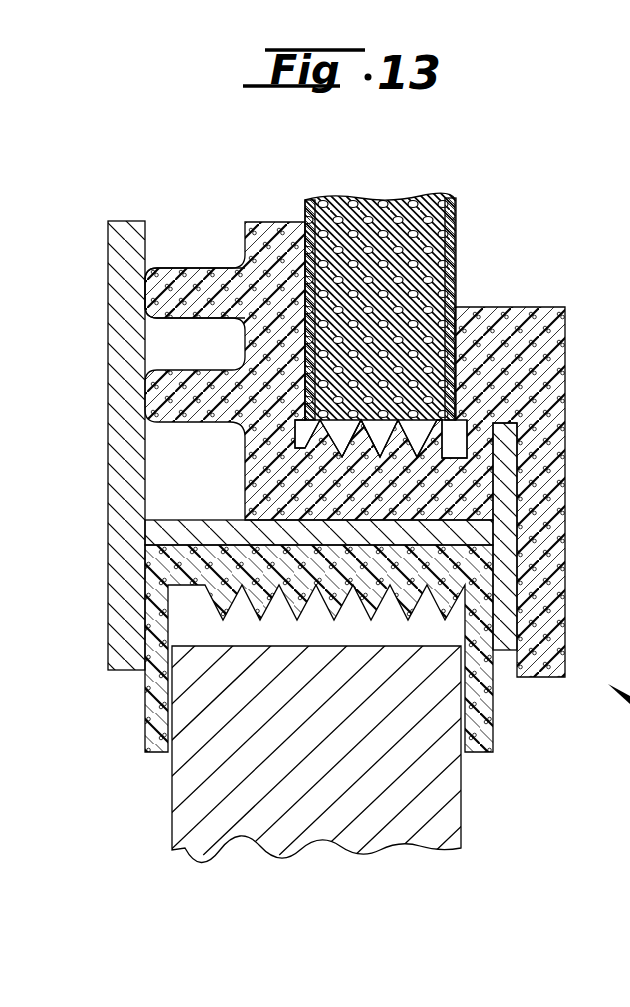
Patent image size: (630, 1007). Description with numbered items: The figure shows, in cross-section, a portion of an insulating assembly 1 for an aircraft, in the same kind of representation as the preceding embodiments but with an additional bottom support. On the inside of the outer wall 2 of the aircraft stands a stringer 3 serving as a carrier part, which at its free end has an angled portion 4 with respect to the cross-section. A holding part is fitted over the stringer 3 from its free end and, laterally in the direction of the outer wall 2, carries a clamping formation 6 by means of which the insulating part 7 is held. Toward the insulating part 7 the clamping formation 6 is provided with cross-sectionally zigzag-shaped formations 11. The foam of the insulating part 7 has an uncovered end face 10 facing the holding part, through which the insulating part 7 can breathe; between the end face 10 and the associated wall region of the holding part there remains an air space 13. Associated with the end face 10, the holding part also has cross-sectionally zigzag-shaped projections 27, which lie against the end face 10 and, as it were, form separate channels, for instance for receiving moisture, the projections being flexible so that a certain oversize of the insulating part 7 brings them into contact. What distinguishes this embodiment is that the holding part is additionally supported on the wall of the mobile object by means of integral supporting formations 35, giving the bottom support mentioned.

The insulating assembly 1 is at (535, 222).
The outer wall 2 is at (118, 455).
The stringer 3 is at (197, 530).
The angled portion 4 is at (503, 568).
The clamping formation 6 is at (462, 298).
The insulating part 7 is at (365, 190).
The end face 10 is at (320, 424).
The zigzag-shaped formation 11 is at (302, 226).
The air space 13 is at (418, 433).
The zigzag-shaped projection 27 is at (340, 425).
The supporting formation 35 is at (192, 282).